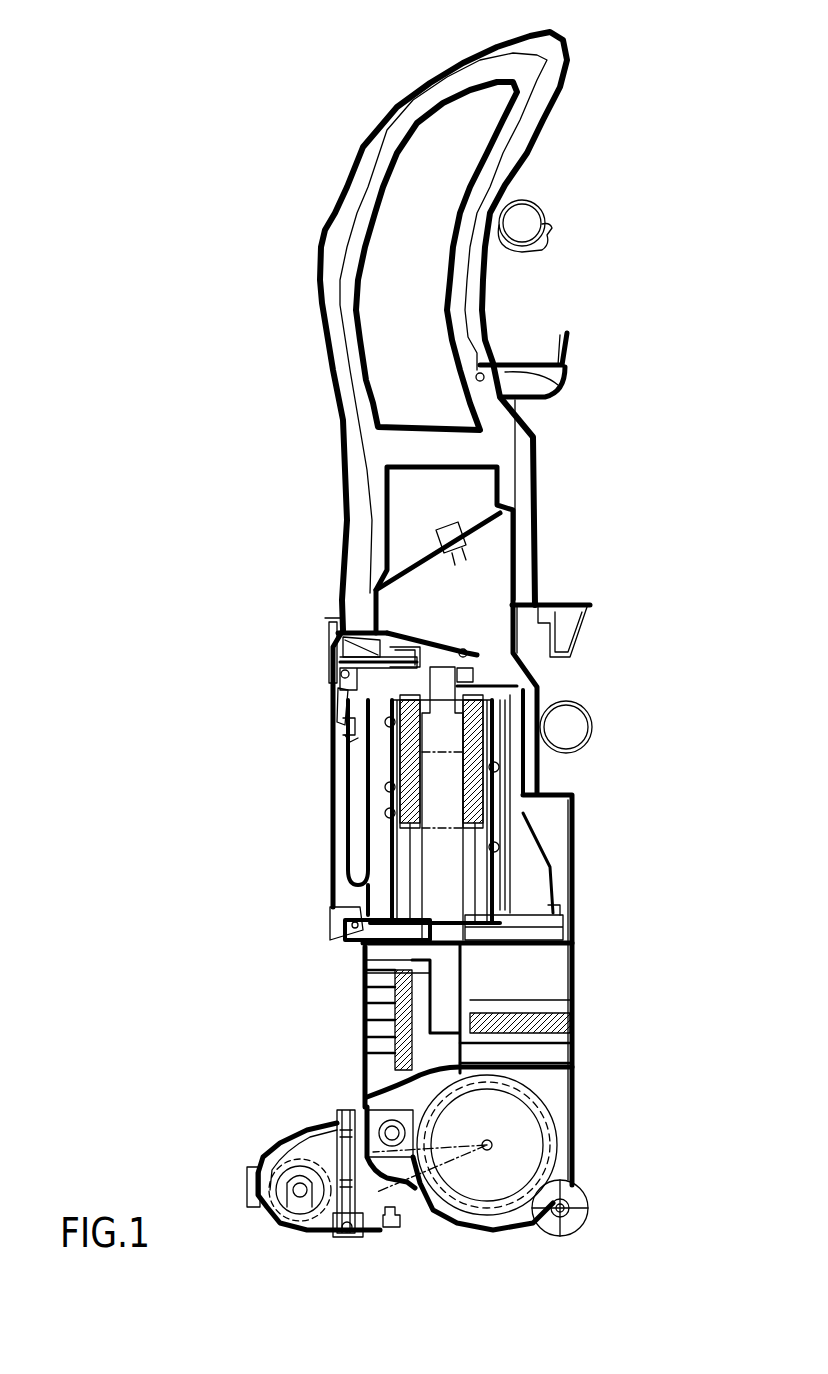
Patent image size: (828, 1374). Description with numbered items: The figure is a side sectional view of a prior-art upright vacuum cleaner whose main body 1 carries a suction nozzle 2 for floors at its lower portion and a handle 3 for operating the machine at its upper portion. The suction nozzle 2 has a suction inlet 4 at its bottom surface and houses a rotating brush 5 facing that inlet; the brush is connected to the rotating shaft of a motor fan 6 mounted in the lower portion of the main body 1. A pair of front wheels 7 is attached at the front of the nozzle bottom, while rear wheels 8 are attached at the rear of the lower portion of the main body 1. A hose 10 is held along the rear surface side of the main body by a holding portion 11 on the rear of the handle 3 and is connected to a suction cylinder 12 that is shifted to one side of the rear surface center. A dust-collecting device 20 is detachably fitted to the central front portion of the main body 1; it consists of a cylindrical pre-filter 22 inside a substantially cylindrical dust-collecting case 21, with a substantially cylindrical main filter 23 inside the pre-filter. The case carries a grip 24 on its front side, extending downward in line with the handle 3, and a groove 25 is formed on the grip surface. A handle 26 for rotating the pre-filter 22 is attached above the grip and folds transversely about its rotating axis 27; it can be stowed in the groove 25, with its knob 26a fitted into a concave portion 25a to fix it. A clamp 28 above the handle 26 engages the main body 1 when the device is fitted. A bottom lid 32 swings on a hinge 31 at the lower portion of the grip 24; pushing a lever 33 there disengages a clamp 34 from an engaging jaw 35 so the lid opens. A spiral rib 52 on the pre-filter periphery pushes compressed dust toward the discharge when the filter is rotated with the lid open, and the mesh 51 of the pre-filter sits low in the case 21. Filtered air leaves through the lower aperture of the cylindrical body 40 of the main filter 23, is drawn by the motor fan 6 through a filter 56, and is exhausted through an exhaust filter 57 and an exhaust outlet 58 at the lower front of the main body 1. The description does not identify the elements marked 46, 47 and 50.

The main body 1 is at (613, 808).
The suction nozzle 2 is at (290, 1137).
The handle 3 is at (507, 165).
The suction inlet 4 is at (280, 1228).
The rotating brush 5 is at (262, 1183).
The motor fan 6 is at (532, 1137).
The front wheels 7 is at (352, 1234).
The rear wheels 8 is at (565, 1198).
The hose 10 is at (542, 210).
The holding portion 11 is at (485, 250).
The suction cylinder 12 is at (578, 722).
The dust-collecting device 20 is at (310, 868).
The dust-collecting case 21 is at (367, 843).
The pre-filter 22 is at (400, 797).
The main filter 23 is at (400, 768).
The grip 24 is at (333, 797).
The groove 25 is at (340, 780).
The concave portion 25a is at (343, 727).
The handle 26 is at (340, 705).
The knob 26a is at (340, 735).
The rotating axis 27 is at (350, 660).
The clamp 28 is at (352, 606).
The hinge 31 is at (338, 910).
The bottom lid 32 is at (523, 920).
The lever 33 is at (332, 935).
The clamp 34 is at (557, 923).
The engaging jaw 35 is at (563, 940).
The cylindrical body 40 is at (470, 873).
The cover 46 is at (403, 650).
The air pipe 47 is at (435, 675).
The cyclone unit 50 is at (450, 760).
The mesh 51 is at (393, 872).
The spiral rib 52 is at (493, 847).
The filter 56 is at (573, 1030).
The exhaust filter 57 is at (363, 1022).
The exhaust outlet 58 is at (373, 1000).